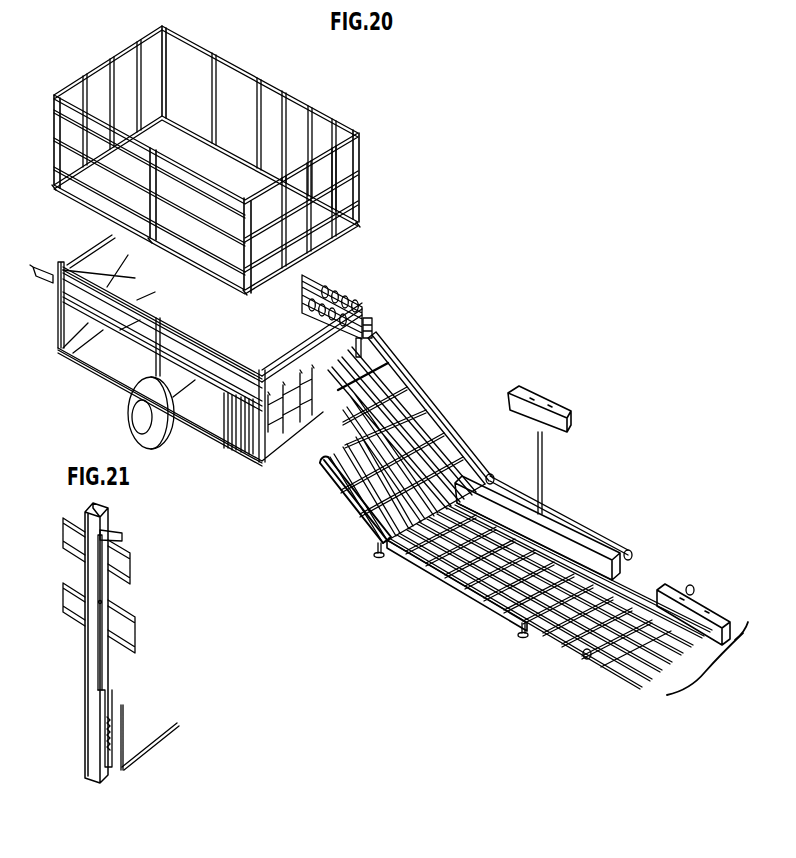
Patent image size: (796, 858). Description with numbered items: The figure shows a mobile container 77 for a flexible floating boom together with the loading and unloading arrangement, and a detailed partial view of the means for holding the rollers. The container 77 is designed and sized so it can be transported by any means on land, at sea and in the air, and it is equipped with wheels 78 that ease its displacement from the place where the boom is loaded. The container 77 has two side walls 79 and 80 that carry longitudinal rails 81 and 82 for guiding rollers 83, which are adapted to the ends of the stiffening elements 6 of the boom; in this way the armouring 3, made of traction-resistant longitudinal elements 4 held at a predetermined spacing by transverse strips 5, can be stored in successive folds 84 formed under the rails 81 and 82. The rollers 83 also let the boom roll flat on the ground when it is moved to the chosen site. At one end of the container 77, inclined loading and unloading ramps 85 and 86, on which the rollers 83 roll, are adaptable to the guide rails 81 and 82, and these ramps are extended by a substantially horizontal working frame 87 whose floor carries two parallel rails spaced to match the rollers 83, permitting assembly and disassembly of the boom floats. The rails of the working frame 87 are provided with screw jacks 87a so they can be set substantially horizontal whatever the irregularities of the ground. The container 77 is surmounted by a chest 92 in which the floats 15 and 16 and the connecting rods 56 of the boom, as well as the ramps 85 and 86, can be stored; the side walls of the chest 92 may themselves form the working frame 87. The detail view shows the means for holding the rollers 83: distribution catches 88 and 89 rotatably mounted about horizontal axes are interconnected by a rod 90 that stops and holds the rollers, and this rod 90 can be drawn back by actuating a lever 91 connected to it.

In FIG. 20, the chest 92 is at (363, 132).
In FIG. 20, the container 77 is at (430, 217).
In FIG. 20, the longitudinal rail 81 is at (108, 308).
In FIG. 21, the longitudinal rail 81 is at (122, 562).
In FIG. 20, the longitudinal rail 82 is at (133, 328).
In FIG. 21, the longitudinal rail 82 is at (128, 623).
In FIG. 20, the wheels 78 is at (128, 420).
In FIG. 20, the side wall 79 is at (198, 413).
In FIG. 20, the folds 84 is at (227, 432).
In FIG. 20, the strips 5 is at (278, 423).
In FIG. 20, the longitudinal elements 4 is at (302, 416).
In FIG. 20, the rollers 83 is at (347, 299).
In FIG. 20, the side wall 80 is at (373, 322).
In FIG. 20, the unloading ramp 86 is at (455, 432).
In FIG. 20, the loading ramp 85 is at (350, 507).
In FIG. 20, the working frame 87 is at (463, 593).
In FIG. 20, the screw jacks 87a is at (374, 556).
In FIG. 20, the float 15 is at (596, 550).
In FIG. 20, the float 16 is at (566, 424).
In FIG. 20, the connecting rod 56 is at (544, 470).
In FIG. 20, the stiffening element 6 is at (683, 588).
In FIG. 20, the armouring 3 is at (707, 661).
In FIG. 21, the catch 88 is at (108, 537).
In FIG. 21, the catch 89 is at (108, 602).
In FIG. 21, the rod 90 is at (104, 686).
In FIG. 21, the lever 91 is at (124, 710).